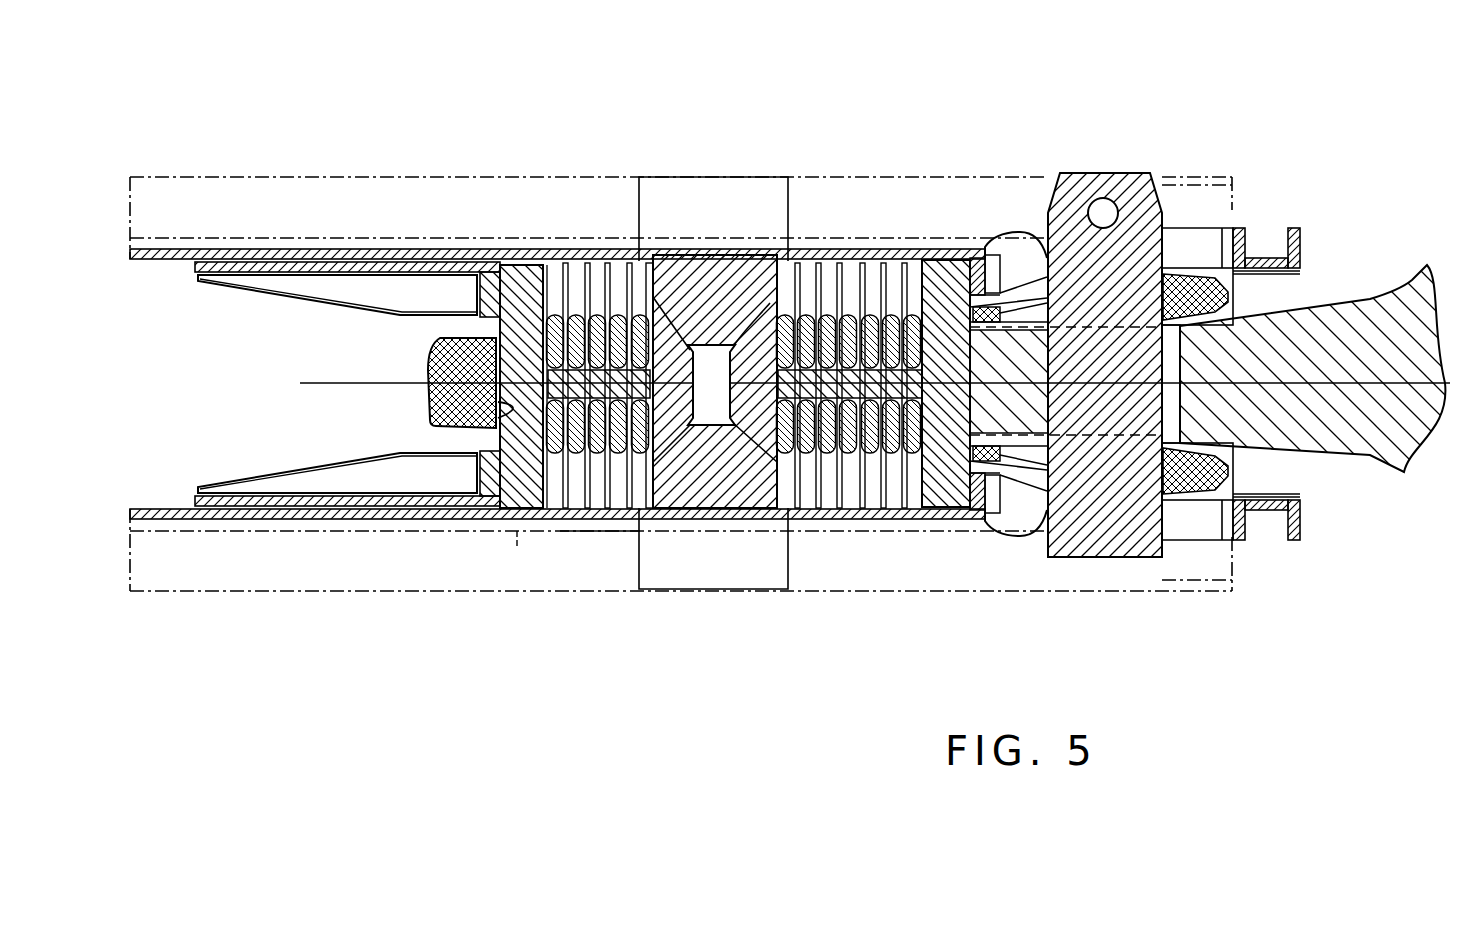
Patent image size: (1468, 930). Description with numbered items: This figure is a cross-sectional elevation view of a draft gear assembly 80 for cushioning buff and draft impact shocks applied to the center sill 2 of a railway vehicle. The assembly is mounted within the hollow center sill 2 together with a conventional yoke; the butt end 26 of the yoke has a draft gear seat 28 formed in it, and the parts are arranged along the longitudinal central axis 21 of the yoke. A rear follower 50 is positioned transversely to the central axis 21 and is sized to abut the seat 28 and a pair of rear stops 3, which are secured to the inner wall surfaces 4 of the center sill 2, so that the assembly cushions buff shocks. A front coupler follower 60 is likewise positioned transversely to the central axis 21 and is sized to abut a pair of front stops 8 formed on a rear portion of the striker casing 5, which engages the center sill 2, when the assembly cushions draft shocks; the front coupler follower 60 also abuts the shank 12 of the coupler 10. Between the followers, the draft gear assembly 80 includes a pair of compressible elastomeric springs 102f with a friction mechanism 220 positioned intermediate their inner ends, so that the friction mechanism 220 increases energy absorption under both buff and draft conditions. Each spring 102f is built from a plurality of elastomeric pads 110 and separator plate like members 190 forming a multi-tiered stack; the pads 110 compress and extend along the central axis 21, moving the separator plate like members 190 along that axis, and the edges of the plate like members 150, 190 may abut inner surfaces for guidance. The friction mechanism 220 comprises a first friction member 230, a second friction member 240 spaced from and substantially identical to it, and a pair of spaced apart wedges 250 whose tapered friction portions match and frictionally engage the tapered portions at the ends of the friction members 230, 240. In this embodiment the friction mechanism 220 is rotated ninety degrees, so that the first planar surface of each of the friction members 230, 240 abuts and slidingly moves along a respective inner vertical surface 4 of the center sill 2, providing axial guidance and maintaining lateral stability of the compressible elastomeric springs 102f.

The center sill 2 is at (228, 190).
The rear stops 3 is at (280, 488).
The inner wall surfaces 4 is at (157, 508).
The striker casing 5 is at (1203, 523).
The front stops 8 is at (985, 507).
The coupler 10 is at (1412, 278).
The shank 12 is at (1003, 413).
The longitudinal central axis 21 is at (300, 384).
The butt end 26 is at (432, 348).
The draft gear seat 28 is at (448, 427).
The rear follower 50 is at (527, 258).
The front coupler follower 60 is at (952, 270).
The draft gear assembly 80 is at (884, 86).
The compressible springs 102f is at (598, 540).
The pads 110 is at (874, 480).
The plate like members 150 is at (917, 487).
The separator plate like members 190 is at (800, 480).
The friction mechanism 220 is at (688, 120).
The first friction member 230 is at (716, 268).
The second friction member 240 is at (703, 484).
The wedges 250 is at (783, 300).